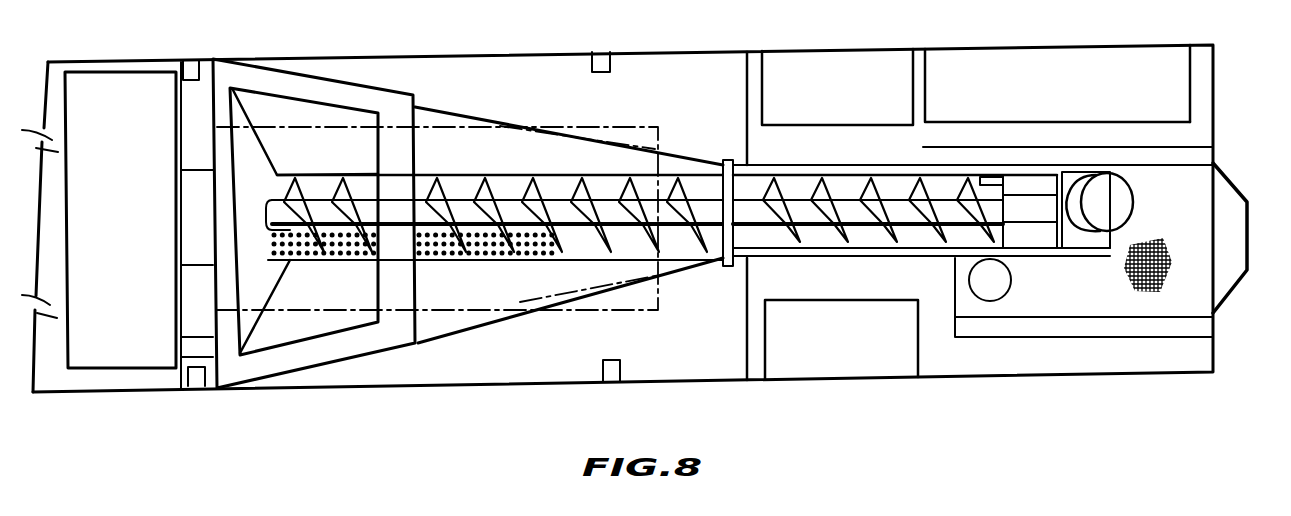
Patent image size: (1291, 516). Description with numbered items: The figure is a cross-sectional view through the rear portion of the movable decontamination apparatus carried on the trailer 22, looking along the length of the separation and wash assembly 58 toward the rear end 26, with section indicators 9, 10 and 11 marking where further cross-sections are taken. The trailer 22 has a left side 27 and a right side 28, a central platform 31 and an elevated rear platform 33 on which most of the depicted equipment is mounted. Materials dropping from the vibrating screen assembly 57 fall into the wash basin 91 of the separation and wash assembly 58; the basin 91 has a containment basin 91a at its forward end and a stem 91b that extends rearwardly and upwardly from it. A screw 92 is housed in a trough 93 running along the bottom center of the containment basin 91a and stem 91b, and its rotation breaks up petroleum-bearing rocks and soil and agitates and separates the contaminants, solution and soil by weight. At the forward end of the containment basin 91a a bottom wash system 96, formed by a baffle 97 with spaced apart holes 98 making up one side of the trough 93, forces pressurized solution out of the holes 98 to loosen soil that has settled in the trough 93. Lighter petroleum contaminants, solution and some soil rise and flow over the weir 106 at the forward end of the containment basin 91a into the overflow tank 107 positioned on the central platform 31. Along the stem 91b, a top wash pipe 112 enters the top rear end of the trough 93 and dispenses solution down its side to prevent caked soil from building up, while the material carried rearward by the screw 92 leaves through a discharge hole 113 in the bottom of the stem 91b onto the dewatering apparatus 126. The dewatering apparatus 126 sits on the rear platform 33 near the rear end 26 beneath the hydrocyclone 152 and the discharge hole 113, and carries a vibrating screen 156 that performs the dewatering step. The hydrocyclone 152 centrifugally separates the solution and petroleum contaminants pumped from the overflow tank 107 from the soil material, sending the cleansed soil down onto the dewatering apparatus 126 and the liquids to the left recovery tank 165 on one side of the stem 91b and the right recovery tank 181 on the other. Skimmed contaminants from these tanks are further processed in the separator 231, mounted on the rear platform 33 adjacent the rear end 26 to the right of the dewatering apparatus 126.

The section line 9- 9 is at (477, 112).
The section line 10- 10 is at (855, 162).
The section line 11- 11 is at (115, 47).
The trailer 22 is at (712, 49).
The rear end 26 is at (1215, 92).
The left side 27 is at (990, 378).
The right side 28 is at (307, 57).
The central platform 31 is at (642, 67).
The rear platform 33 is at (1197, 133).
The vibrating screen assembly 57 is at (634, 315).
The separation and wash assembly 58 is at (417, 368).
The wash basin 91 is at (340, 367).
The containment basin 91a is at (420, 110).
The stem 91b is at (1038, 175).
The screw 92 is at (952, 197).
The trough 93 is at (513, 185).
The bottom wash system 96 is at (368, 260).
The baffle 97 is at (318, 268).
The holes 98 is at (290, 238).
The weir 106 is at (217, 197).
The overflow tank 107 is at (141, 205).
The top wash pipe 112 is at (987, 180).
The discharge hole 113 is at (1047, 208).
The dewatering apparatus 126 is at (1124, 340).
The hydrocyclone 152 is at (1040, 292).
The vibrating screen 156 is at (1212, 316).
The left recovery tank 165 is at (850, 355).
The right recovery tank 181 is at (849, 106).
The separator 231 is at (1056, 102).